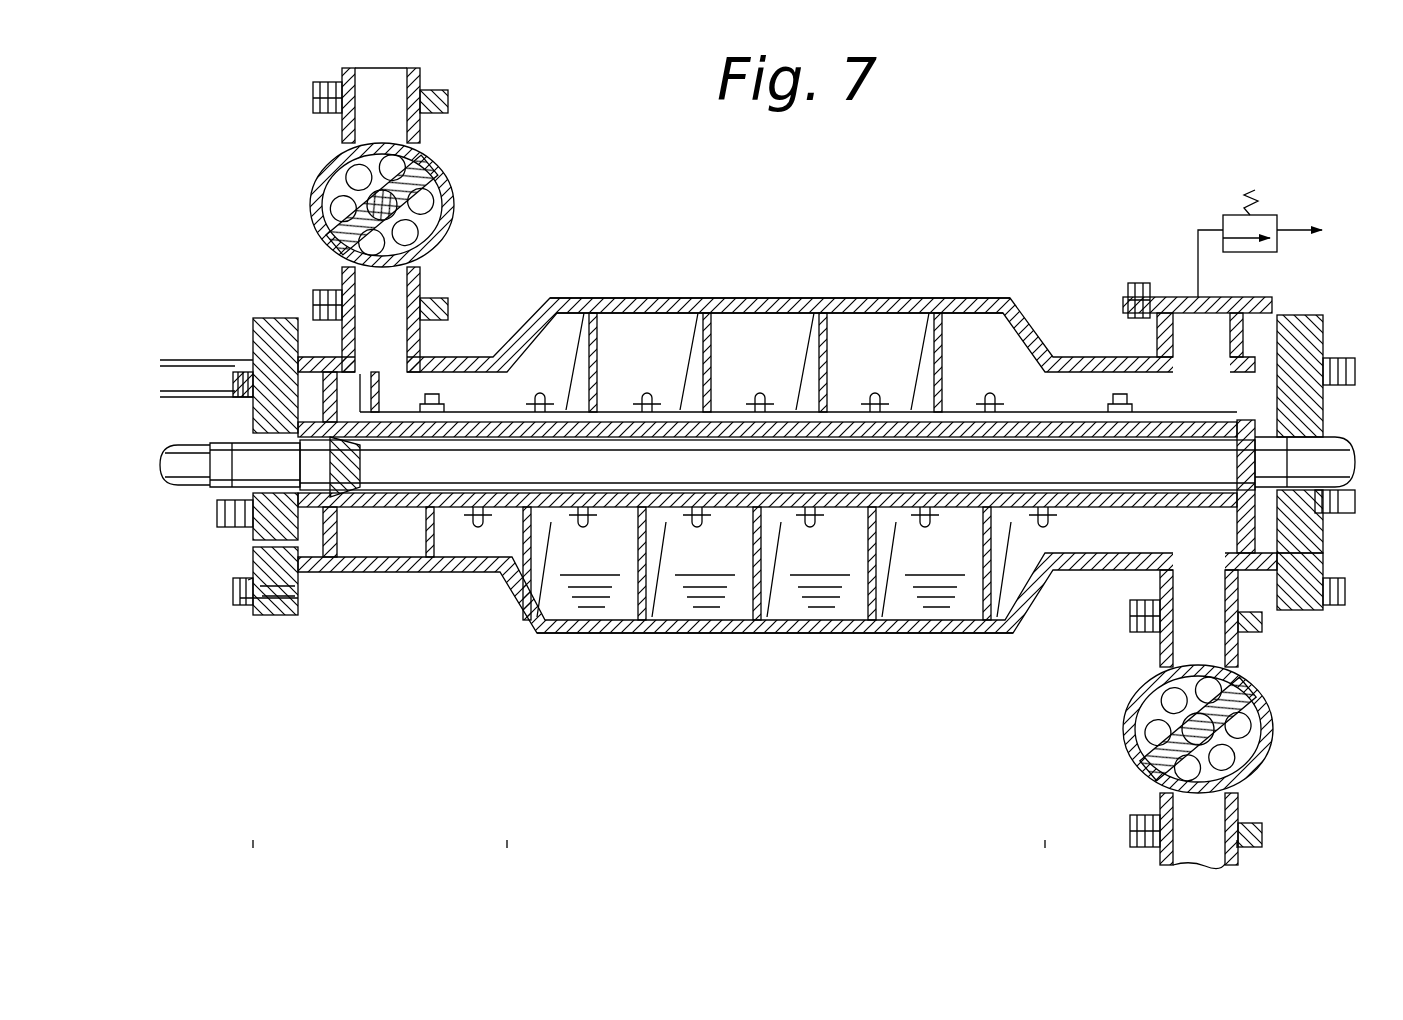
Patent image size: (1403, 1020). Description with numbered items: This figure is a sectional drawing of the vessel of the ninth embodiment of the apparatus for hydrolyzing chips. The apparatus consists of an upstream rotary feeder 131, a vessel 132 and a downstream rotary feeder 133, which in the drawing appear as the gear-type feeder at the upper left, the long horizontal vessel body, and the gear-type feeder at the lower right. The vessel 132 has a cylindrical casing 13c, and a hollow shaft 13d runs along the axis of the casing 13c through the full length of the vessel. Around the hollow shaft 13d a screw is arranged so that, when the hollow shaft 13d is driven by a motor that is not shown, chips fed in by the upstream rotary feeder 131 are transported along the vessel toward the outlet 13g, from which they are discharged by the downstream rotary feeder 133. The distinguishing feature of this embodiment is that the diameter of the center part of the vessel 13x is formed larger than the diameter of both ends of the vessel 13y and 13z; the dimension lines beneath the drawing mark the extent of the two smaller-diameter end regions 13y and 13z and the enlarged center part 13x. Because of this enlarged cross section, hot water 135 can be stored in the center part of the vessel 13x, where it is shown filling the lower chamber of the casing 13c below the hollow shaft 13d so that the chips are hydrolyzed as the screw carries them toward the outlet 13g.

The upstream rotary feeder 131 is at (472, 190).
The vessel 132 is at (797, 282).
The downstream rotary feeder 133 is at (1102, 684).
The hot water 135 is at (788, 592).
The cylindrical casing 13c is at (949, 298).
The hollow shaft 13d is at (1207, 420).
The outlet 13g is at (1199, 556).
The center part of the vessel 13x is at (1045, 848).
The end of the vessel 13y is at (507, 913).
The end of the vessel 13z is at (1237, 848).